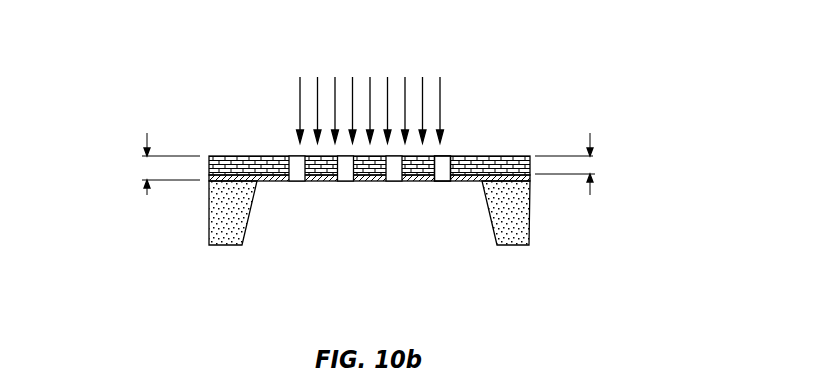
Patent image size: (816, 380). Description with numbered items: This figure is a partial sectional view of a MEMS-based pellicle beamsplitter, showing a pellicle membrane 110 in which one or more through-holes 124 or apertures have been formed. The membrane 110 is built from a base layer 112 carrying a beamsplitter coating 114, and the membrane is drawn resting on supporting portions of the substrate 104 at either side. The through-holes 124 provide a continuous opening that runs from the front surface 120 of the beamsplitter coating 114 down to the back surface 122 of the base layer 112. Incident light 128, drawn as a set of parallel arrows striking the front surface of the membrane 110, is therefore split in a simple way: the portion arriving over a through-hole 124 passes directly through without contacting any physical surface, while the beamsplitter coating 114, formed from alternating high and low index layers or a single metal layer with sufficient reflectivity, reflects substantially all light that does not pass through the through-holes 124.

The substrate 104 is at (486, 203).
The pellicle membrane 110 is at (142, 169).
The base layer 112 is at (530, 178).
The beamsplitter coating 114 is at (592, 165).
The front surface 120 is at (235, 156).
The back surface 122 is at (322, 181).
The through-holes 124 is at (443, 161).
The incident light 128 is at (298, 105).